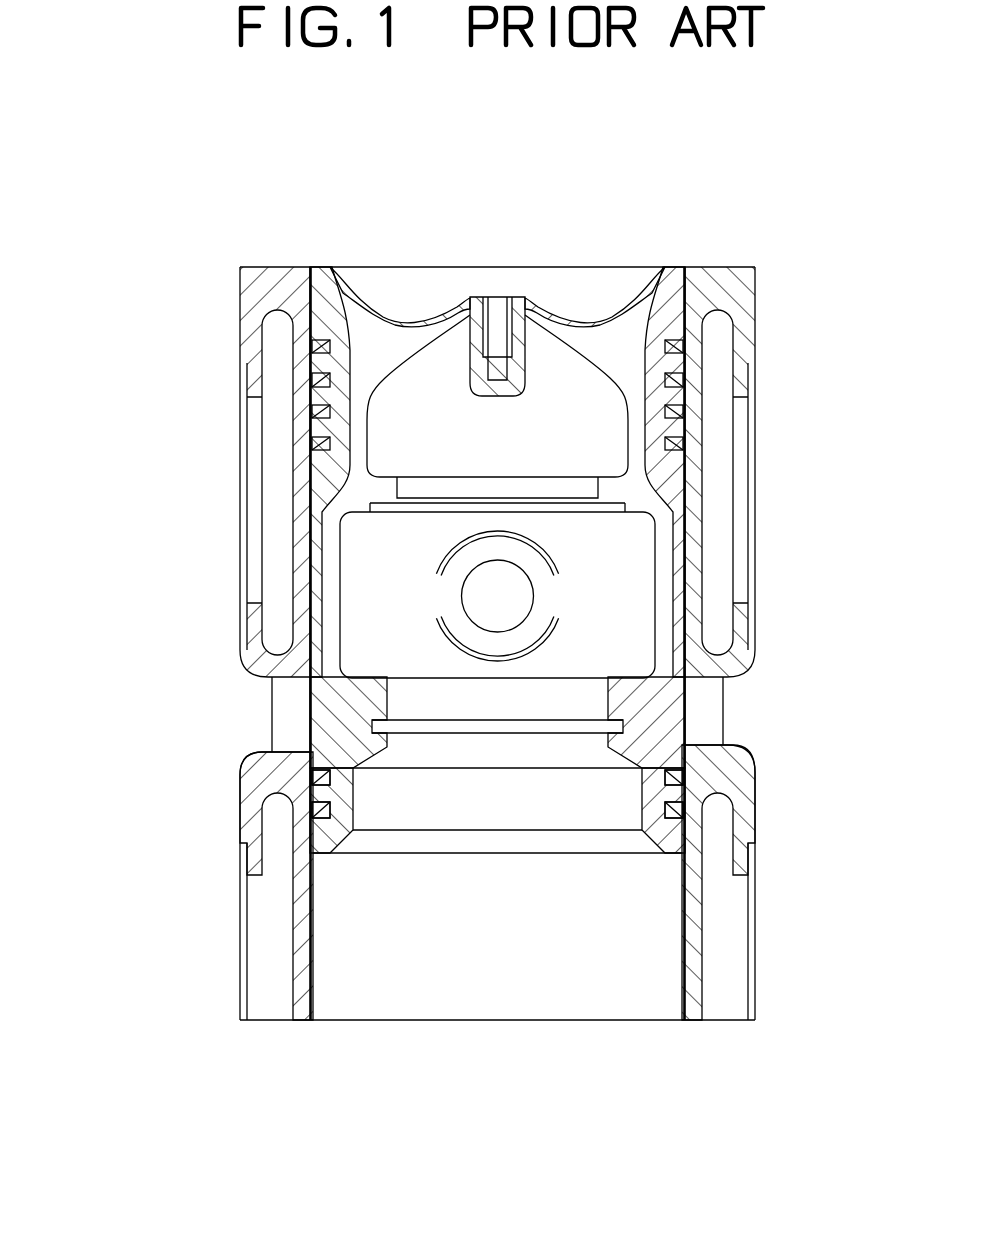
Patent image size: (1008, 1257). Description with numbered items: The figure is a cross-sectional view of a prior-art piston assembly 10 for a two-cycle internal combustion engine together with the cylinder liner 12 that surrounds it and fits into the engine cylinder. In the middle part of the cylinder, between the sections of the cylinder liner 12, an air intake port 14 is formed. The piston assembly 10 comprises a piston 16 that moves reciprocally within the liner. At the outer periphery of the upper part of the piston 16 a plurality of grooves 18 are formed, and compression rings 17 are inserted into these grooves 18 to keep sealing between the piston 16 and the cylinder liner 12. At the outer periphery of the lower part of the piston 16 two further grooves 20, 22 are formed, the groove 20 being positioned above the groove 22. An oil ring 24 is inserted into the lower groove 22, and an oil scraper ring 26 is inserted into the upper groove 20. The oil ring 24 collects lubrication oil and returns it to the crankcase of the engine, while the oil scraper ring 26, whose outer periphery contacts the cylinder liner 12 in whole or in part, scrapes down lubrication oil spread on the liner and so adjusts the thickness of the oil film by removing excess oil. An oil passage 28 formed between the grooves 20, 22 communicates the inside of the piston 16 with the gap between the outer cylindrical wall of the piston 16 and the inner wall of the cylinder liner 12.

The piston assembly 10 is at (768, 260).
The cylinder liner 12 is at (244, 661).
The air intake port 14 is at (274, 717).
The piston 16 is at (568, 298).
The compression rings 17 is at (314, 449).
The grooves 18 is at (683, 452).
The groove 20 is at (690, 743).
The groove 22 is at (692, 848).
The oil ring 24 is at (690, 817).
The oil scraper ring 26 is at (690, 768).
The oil passage 28 is at (316, 793).